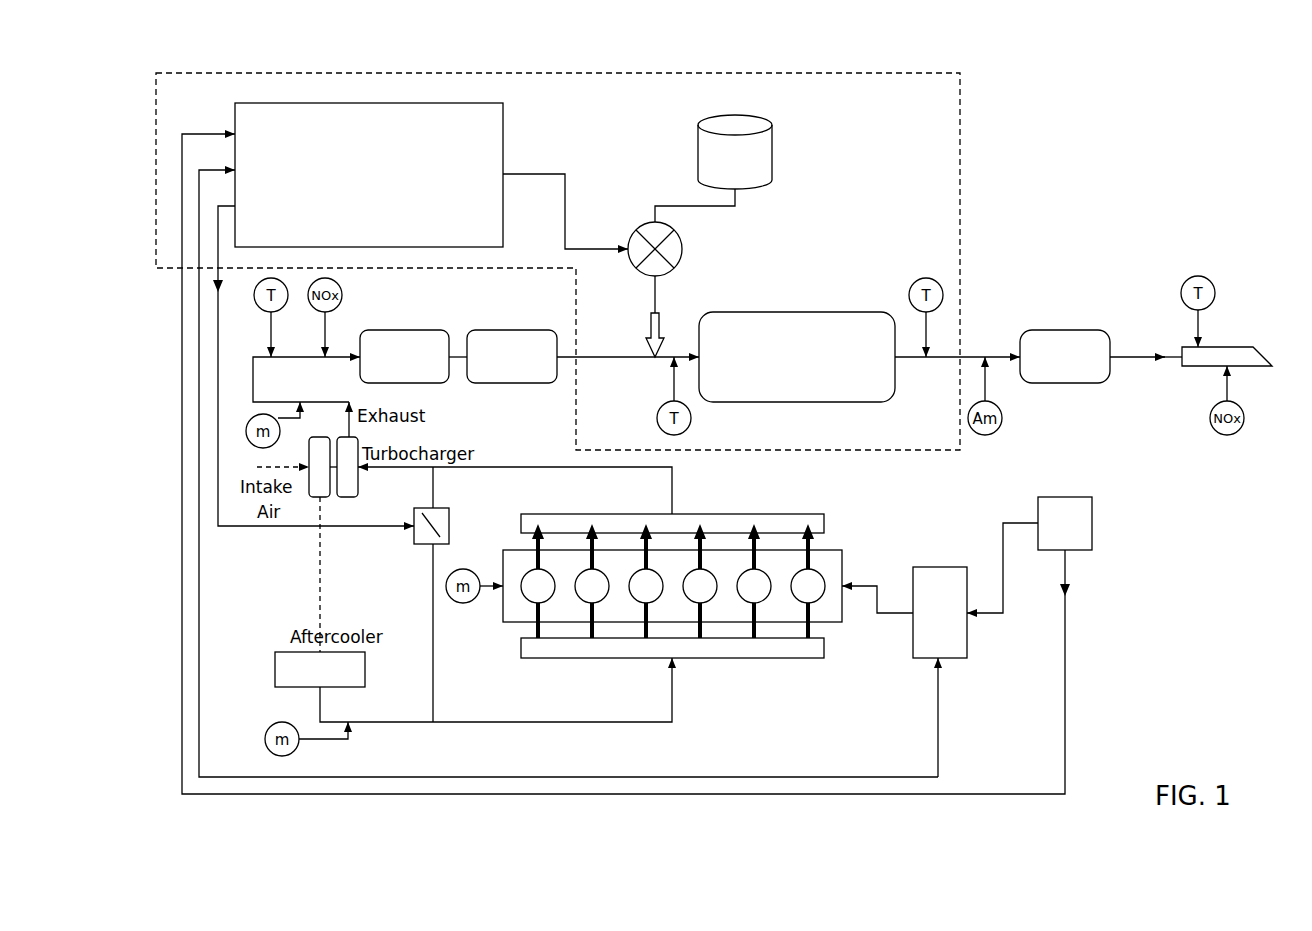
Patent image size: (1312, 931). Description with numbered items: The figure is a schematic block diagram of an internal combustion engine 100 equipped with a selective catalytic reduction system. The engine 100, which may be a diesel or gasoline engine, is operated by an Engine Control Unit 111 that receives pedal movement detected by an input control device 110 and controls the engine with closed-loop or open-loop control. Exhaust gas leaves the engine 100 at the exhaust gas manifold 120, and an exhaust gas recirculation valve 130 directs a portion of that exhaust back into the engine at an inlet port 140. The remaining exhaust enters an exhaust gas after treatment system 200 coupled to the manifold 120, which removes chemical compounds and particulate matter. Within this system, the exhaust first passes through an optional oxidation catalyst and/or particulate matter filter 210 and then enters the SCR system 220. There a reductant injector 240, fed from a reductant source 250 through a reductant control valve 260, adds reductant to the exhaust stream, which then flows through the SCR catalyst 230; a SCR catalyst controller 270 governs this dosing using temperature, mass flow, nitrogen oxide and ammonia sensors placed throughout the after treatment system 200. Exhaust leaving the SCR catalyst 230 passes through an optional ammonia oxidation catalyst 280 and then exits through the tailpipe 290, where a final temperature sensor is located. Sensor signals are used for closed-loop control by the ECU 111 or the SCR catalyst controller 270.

The internal combustion engine 100 is at (842, 562).
The input control device 110 is at (1045, 497).
The Engine Control Unit (ECU) 111 is at (923, 567).
The exhaust gas manifold 120 is at (735, 514).
The exhaust gas recirculation (EGR) valve 130 is at (450, 527).
The inlet port 140 is at (433, 667).
The exhaust gas after treatment system 200 is at (1116, 184).
The oxidation catalyst and/or particulate matter filter 210 is at (366, 327).
The SCR system 220 is at (960, 225).
The SCR catalyst 230 is at (765, 312).
The reductant injector 240 is at (647, 335).
The reductant source 250 is at (772, 160).
The reductant control valve 260 is at (682, 257).
The SCR catalyst controller 270 is at (503, 143).
The ammonia oxidation (AMOX) catalyst 280 is at (1052, 330).
The tailpipe 290 is at (1227, 347).